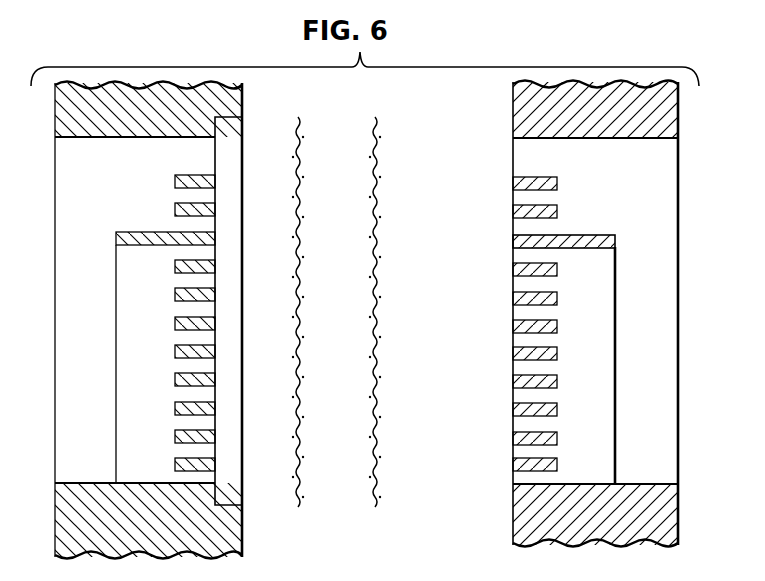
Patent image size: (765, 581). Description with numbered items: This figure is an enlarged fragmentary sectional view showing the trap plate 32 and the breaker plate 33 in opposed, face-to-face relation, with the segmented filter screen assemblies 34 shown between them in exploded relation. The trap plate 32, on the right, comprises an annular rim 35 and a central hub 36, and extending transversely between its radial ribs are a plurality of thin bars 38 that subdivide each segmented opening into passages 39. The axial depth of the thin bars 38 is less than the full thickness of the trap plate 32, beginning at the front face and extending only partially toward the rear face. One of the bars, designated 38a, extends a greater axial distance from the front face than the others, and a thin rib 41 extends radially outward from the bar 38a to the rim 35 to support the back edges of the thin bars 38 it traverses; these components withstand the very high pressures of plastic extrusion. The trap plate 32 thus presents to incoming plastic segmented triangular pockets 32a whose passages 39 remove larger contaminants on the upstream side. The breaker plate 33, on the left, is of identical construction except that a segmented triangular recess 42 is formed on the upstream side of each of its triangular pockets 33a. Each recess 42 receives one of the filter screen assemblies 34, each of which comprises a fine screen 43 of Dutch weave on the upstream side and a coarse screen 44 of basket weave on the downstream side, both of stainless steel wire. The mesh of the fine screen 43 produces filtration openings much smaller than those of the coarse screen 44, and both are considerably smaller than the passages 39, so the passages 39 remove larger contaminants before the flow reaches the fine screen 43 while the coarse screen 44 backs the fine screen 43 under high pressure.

The trap plate 32 is at (503, 97).
The triangular pockets 32a is at (648, 217).
The breaker plate 33 is at (252, 102).
The triangular pockets 33a is at (130, 212).
The filter screen assemblies 34 is at (357, 506).
The rim 35 is at (666, 511).
The central hub 36 is at (662, 120).
The thin bars 38 is at (513, 355).
The thin bar 38a is at (518, 241).
The passages 39 is at (522, 422).
The thin rib 41 is at (616, 396).
The recess 42 is at (232, 222).
The fine screen 43 is at (378, 301).
The coarse screen 44 is at (302, 301).